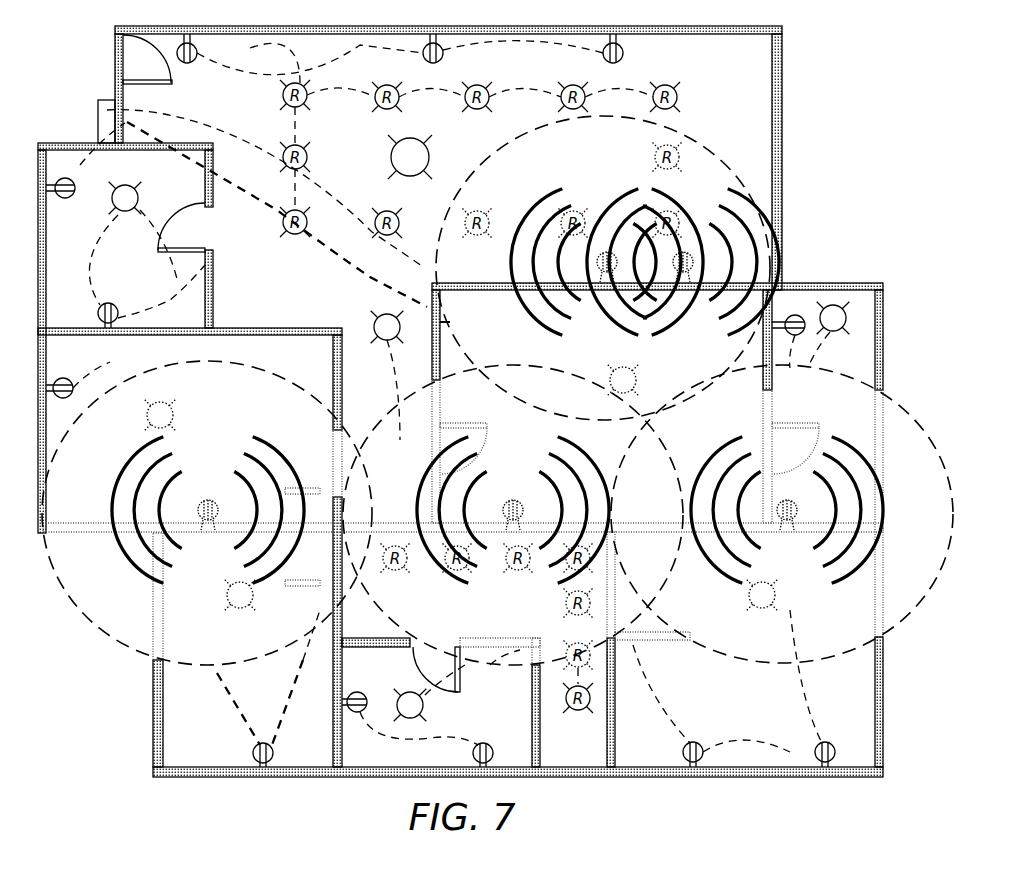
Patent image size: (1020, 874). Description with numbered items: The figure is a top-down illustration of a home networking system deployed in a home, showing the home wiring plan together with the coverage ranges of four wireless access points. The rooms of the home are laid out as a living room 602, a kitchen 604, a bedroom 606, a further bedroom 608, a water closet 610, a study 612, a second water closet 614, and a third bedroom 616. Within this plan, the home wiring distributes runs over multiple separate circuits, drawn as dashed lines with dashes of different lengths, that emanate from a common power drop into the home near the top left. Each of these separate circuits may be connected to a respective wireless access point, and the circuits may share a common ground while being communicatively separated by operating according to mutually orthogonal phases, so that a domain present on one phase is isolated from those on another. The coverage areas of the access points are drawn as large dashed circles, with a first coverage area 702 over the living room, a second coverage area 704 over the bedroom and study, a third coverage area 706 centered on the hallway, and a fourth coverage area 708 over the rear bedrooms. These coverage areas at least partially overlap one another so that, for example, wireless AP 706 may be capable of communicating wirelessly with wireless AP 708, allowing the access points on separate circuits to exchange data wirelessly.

The living room 602 is at (522, 184).
The kitchen 604 is at (139, 277).
The bedroom 606 is at (260, 392).
The bedroom 608 is at (693, 341).
The water closet 610 is at (827, 401).
The study 612 is at (280, 684).
The water closet 614 is at (484, 734).
The bedroom 616 is at (708, 724).
The wireless coverage area of living room speaker 702 is at (707, 224).
The wireless coverage area of bedroom speaker 704 is at (74, 589).
The wireless AP 706 is at (439, 622).
The wireless AP 708 is at (893, 556).